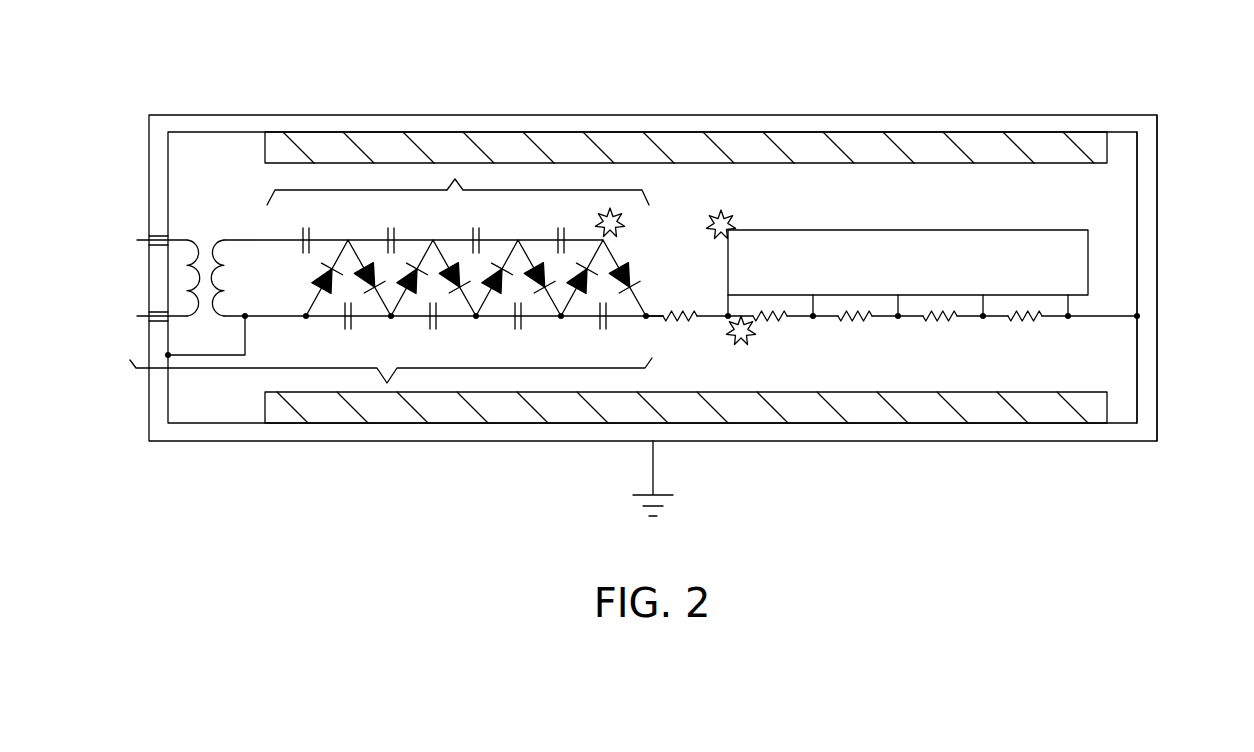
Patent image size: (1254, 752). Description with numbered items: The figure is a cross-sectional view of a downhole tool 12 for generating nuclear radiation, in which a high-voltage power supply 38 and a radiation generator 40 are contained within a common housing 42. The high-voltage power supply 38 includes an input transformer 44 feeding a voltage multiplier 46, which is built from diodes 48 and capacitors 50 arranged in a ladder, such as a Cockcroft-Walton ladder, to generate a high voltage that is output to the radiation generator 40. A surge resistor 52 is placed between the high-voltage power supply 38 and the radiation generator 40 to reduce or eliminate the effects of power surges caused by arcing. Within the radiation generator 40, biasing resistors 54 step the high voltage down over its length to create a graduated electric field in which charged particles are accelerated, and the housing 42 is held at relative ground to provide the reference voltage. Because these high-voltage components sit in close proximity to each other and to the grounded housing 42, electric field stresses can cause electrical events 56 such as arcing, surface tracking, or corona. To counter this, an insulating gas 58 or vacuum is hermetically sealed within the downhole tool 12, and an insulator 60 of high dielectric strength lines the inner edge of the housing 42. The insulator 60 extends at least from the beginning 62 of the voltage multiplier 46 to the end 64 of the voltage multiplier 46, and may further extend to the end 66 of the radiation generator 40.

The downhole tool 12 is at (201, 82).
The high-voltage power supply 38 is at (386, 384).
The radiation generator 40 is at (1015, 230).
The housing 42 is at (865, 125).
The input transformer 44 is at (203, 233).
The voltage multiplier 46 is at (445, 181).
The diodes 48 is at (345, 256).
The capacitors 50 is at (306, 226).
The surge resistor 52 is at (687, 328).
The biasing resistors 54 is at (930, 322).
The electrical events 56 is at (596, 222).
The insulating gas 58 is at (879, 209).
The insulator 60 is at (808, 143).
The beginning of the voltage multiplier 62 is at (249, 240).
The end of the voltage multiplier 64 is at (675, 252).
The end of the radiation generator 66 is at (1100, 258).